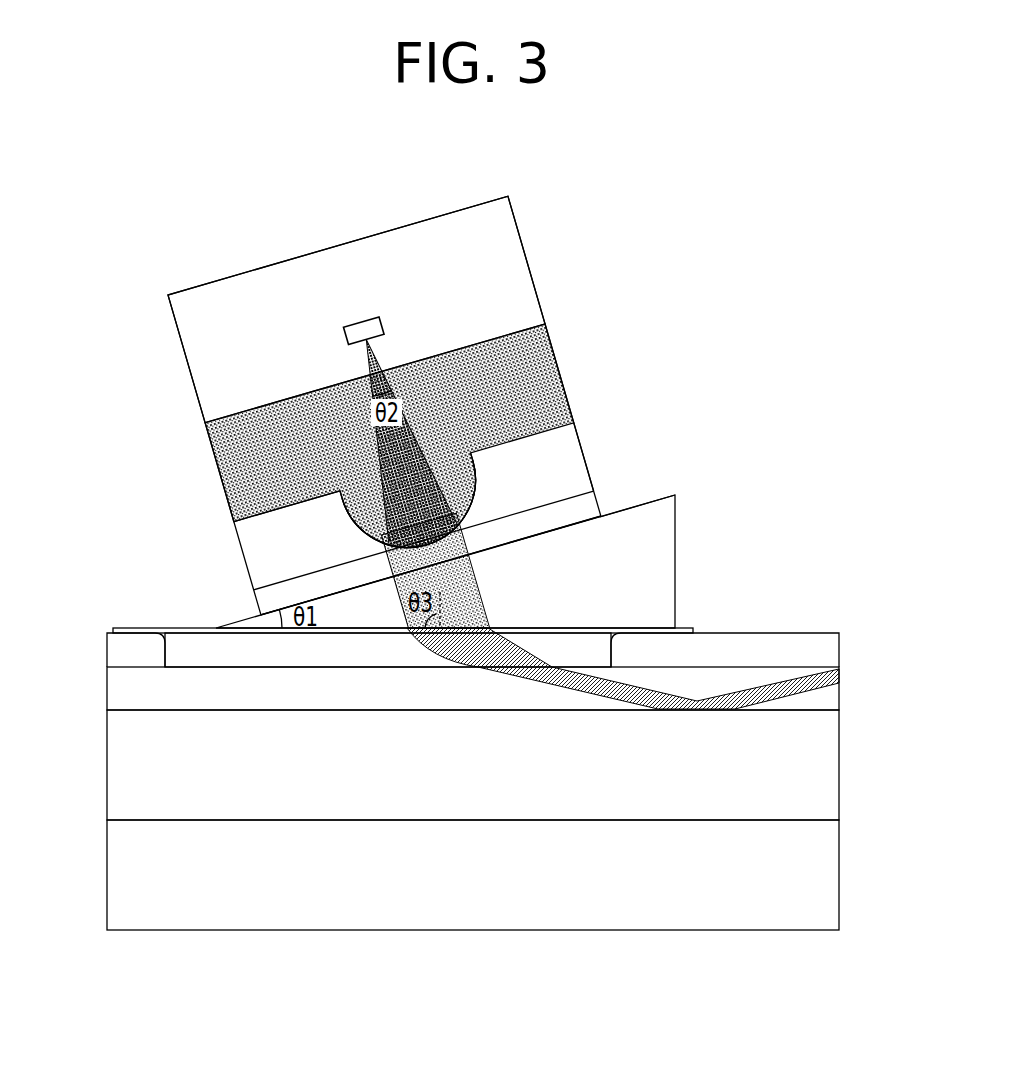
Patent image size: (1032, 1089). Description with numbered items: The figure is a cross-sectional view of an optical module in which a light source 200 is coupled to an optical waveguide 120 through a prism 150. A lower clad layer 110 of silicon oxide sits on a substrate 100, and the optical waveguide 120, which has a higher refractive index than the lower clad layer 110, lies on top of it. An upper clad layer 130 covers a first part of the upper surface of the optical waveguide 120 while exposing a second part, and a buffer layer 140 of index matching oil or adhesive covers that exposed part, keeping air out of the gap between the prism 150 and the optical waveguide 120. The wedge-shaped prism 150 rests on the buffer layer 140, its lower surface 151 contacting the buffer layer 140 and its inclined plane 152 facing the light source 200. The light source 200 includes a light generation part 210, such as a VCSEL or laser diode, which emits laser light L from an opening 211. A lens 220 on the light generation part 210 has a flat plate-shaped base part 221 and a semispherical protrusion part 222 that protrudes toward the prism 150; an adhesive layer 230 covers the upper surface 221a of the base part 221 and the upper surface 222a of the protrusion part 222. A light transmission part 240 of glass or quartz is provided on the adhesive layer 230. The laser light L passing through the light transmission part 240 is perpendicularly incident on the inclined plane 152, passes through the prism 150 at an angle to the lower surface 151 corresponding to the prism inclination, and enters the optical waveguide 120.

The substrate 100 is at (827, 877).
The lower clad layer 110 is at (827, 767).
The optical waveguide 120 is at (120, 690).
The upper clad layer 130 is at (118, 642).
The buffer layer 140 is at (177, 655).
The prism 150 is at (660, 598).
The lower surface of the prism 151 is at (593, 630).
The inclined plane of the prism 152 is at (653, 500).
The light source 200 is at (172, 437).
The light generation part 210 is at (193, 338).
The opening 211 is at (383, 323).
The lens 220 is at (461, 459).
The base part 221 is at (553, 392).
The upper surface of the base part 221a is at (267, 515).
The protrusion part 222 is at (473, 468).
The upper surface of the protrusion part 222a is at (360, 530).
The adhesive layer 230 is at (257, 577).
The light transmission part 240 is at (590, 503).
The laser light L is at (483, 595).